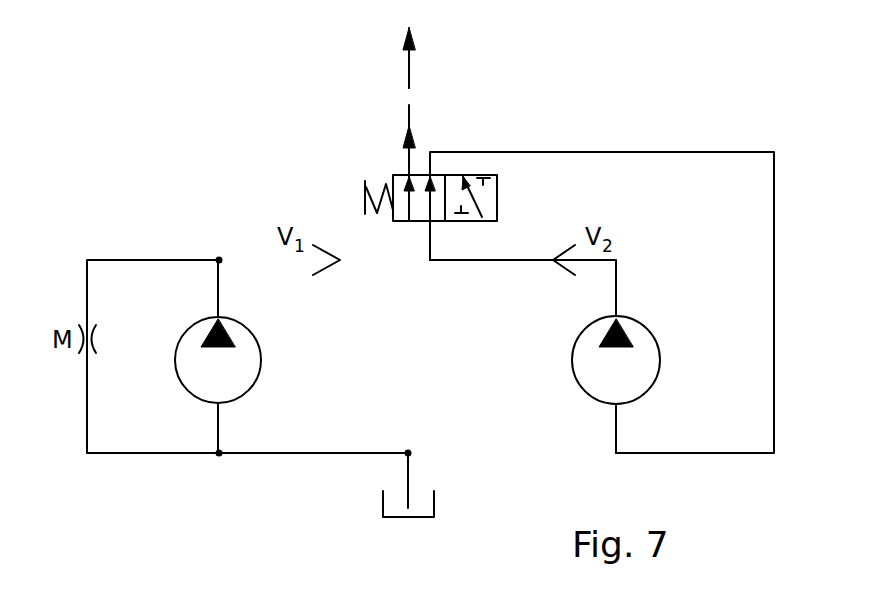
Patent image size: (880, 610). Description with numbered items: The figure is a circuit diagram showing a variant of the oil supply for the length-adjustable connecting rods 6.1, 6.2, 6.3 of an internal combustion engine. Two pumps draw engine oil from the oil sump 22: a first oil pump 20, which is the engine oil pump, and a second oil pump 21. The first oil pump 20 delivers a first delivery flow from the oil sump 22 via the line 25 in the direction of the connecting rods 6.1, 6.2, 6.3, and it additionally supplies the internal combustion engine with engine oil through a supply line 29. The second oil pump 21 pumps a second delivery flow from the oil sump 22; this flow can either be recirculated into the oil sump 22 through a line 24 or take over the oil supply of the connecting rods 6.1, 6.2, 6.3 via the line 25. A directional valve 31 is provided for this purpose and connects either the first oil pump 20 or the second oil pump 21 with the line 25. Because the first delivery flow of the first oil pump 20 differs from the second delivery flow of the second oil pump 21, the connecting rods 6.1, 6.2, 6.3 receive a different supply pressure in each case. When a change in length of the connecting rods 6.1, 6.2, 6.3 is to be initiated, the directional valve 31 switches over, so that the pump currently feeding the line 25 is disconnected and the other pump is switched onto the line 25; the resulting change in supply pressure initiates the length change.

The connecting rod 6.1 is at (434, 74).
The connecting rod 6.2 is at (458, 66).
The connecting rod 6.3 is at (479, 61).
The first oil pump 20 is at (262, 361).
The second oil pump 21 is at (660, 361).
The oil sump 22 is at (383, 503).
The line 24 is at (775, 287).
The line 25 is at (408, 115).
The supply line 29 is at (155, 259).
The directional valve 31 is at (497, 197).